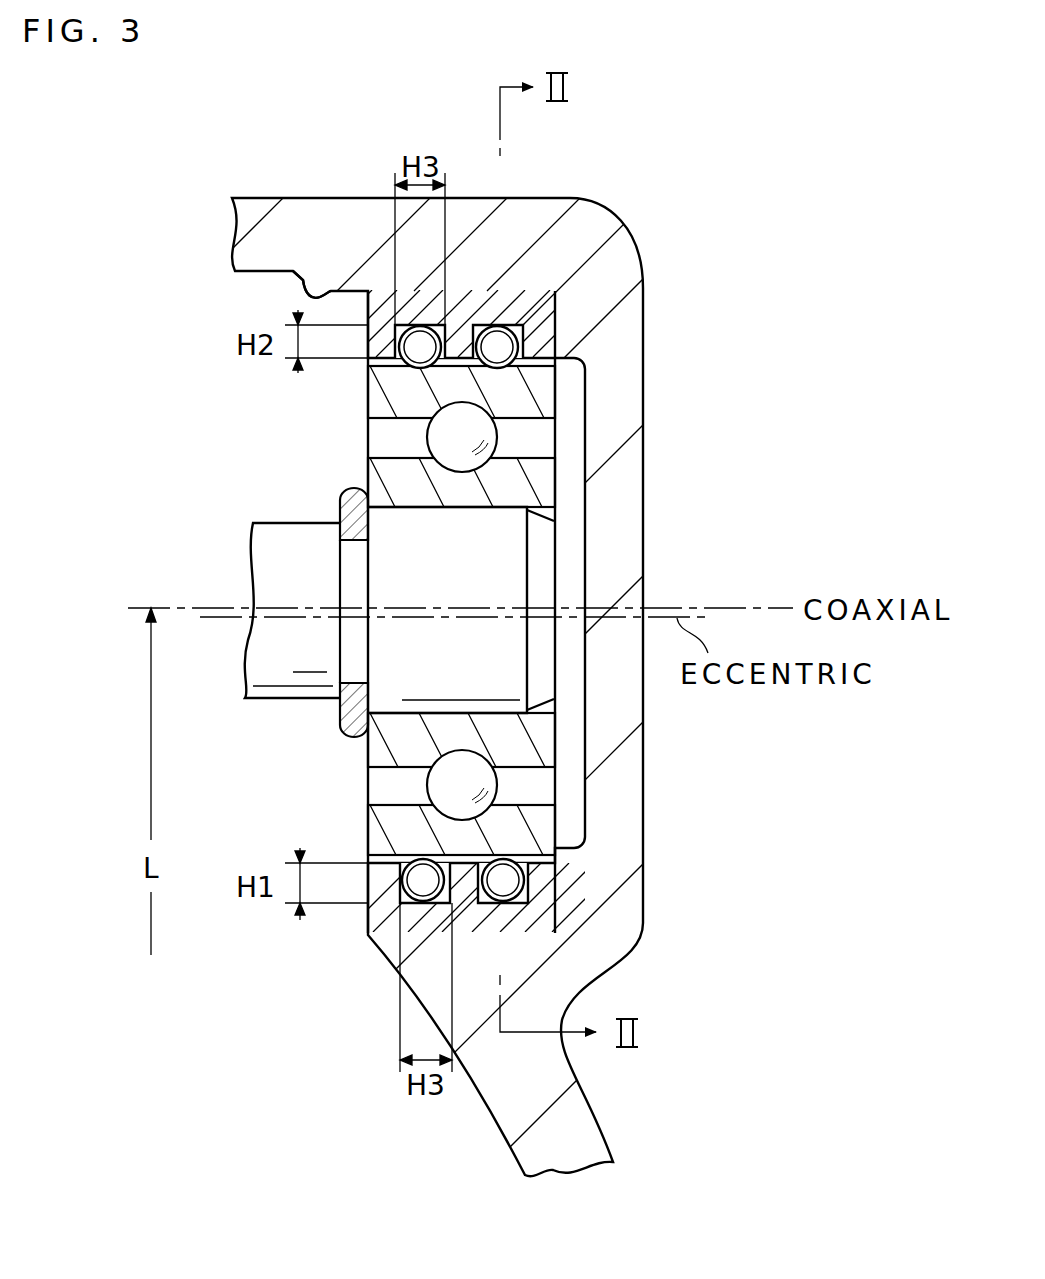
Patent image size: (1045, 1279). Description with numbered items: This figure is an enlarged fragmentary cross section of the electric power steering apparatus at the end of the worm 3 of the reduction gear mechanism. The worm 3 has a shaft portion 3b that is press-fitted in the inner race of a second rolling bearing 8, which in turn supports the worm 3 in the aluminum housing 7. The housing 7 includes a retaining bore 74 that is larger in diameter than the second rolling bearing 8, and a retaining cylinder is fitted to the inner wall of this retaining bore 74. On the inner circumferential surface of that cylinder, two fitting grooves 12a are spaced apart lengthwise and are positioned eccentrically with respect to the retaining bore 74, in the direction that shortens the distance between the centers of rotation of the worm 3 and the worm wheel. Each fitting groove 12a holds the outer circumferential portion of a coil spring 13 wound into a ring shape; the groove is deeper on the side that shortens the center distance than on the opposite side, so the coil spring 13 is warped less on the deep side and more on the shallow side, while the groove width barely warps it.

The worm 3 is at (282, 518).
The shaft portion 3b is at (508, 562).
The housing 7 is at (650, 328).
The second rolling bearing 8 is at (547, 387).
The fitting groove 12a is at (396, 334).
The coil spring 13 is at (447, 326).
The retaining bore 74 is at (300, 287).